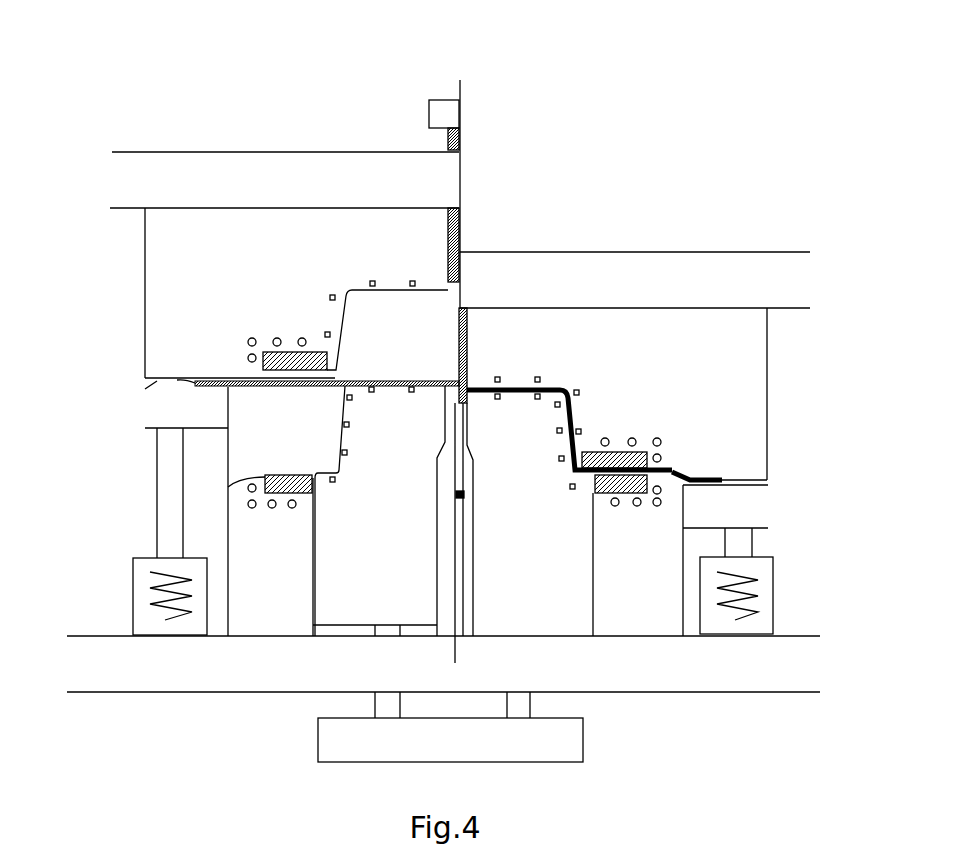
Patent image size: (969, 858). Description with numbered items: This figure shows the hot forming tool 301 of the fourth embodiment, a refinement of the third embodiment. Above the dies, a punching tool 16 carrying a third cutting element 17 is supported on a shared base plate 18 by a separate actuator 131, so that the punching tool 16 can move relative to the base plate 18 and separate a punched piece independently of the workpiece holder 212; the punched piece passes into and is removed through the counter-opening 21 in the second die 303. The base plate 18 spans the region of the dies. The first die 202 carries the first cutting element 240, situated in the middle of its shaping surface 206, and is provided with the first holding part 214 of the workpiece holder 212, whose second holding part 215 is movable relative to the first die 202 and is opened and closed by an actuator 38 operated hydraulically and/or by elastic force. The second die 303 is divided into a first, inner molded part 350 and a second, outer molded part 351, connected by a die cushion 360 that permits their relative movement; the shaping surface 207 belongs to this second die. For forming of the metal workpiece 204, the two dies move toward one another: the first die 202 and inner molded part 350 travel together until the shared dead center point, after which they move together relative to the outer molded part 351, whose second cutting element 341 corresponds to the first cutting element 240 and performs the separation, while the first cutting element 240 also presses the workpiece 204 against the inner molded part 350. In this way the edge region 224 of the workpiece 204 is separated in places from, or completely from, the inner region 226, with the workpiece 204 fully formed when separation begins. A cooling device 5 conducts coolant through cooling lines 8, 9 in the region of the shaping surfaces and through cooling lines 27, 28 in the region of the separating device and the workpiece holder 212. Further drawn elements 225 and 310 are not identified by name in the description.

The hot forming tool 301 is at (190, 57).
The actuator 131 is at (442, 107).
The punching tool 16 is at (445, 143).
The third cutting element 17 is at (447, 233).
The base plate 18 is at (197, 156).
The first die 202 is at (167, 237).
The cooling device 5 is at (308, 288).
The cooling lines 27 is at (283, 332).
The first cutting element 240 is at (263, 346).
The first holding part 214 is at (170, 362).
The workpiece holder 212 is at (128, 386).
The inner region 226 is at (560, 380).
The edge region 224 is at (700, 475).
The cooling lines 8 is at (376, 279).
The cooling lines 9 is at (373, 403).
The shaping surface 206 is at (405, 297).
The wall section 204 is at (412, 376).
The shaping surface 207 is at (338, 418).
The counter-opening 21 is at (447, 221).
The connecting element 225 is at (467, 497).
The second holding part 215 is at (155, 415).
The support legs 310 is at (125, 490).
The second cutting element 341 is at (267, 493).
The cooling lines 28 is at (243, 498).
The actuator 38 is at (107, 598).
The second die 303 is at (238, 637).
The first molded part 350 is at (343, 610).
The second molded part 351 is at (265, 622).
The die cushion 360 is at (400, 770).